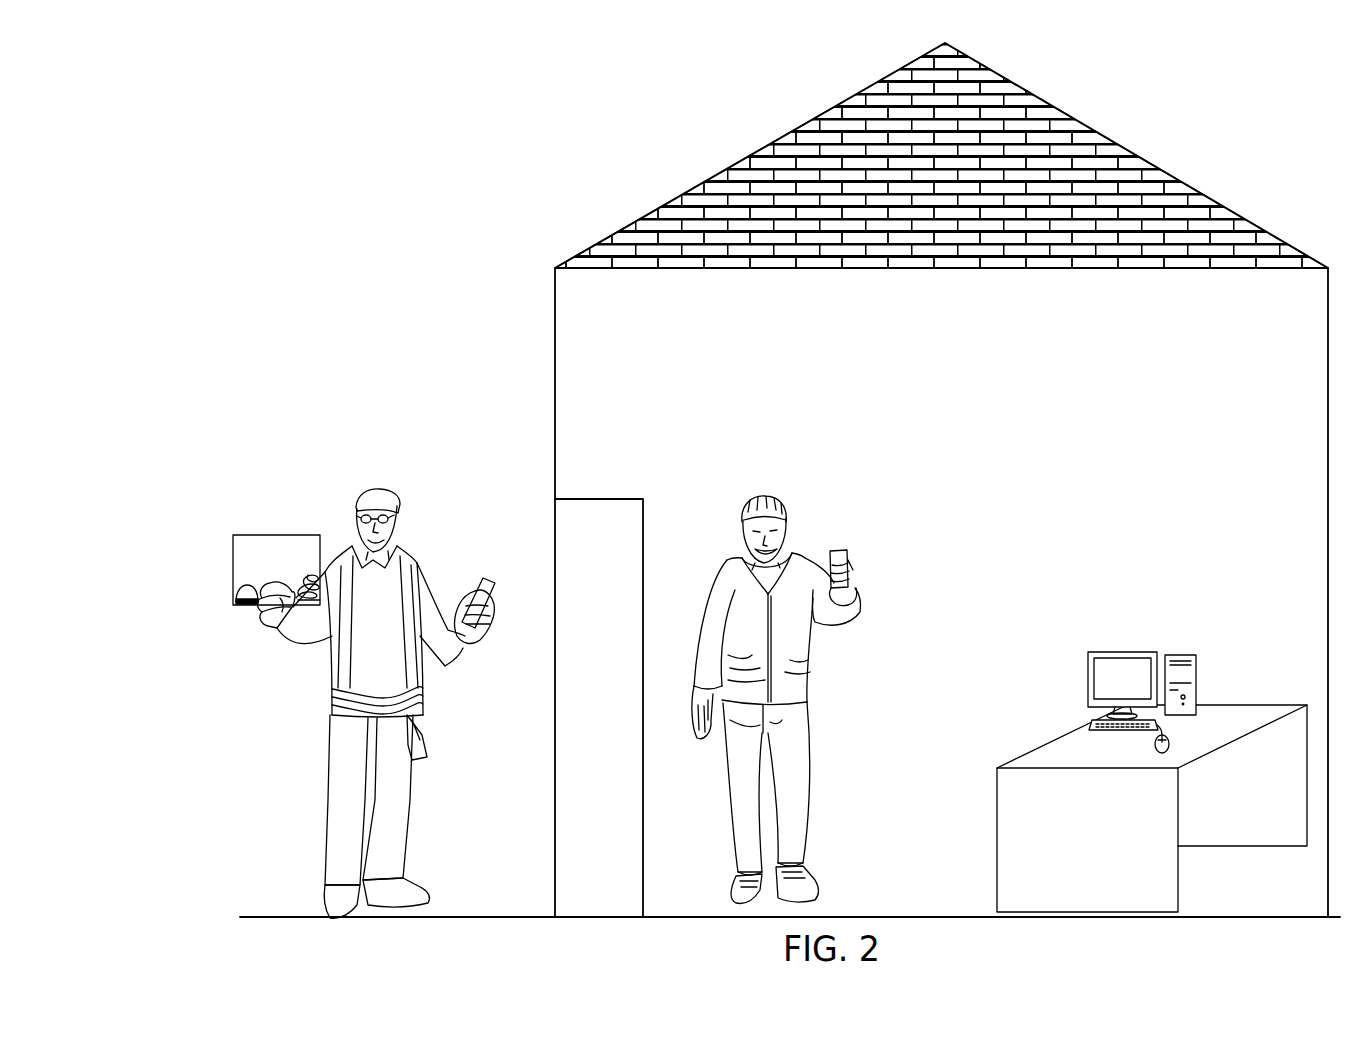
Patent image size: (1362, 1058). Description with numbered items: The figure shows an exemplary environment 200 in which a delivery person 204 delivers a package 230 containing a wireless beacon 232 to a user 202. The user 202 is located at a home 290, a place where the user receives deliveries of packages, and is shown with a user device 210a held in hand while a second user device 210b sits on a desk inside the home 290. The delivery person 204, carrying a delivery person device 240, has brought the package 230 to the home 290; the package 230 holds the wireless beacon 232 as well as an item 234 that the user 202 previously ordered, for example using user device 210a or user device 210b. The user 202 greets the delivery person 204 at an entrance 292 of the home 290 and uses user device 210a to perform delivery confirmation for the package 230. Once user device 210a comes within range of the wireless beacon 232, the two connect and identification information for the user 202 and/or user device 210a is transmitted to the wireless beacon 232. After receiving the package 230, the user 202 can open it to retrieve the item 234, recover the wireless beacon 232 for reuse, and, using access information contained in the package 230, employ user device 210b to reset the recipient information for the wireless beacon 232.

The environment 200 is at (1251, 126).
The home 290 is at (985, 307).
The entrance 292 is at (626, 492).
The user 202 is at (768, 497).
The user device 210a is at (838, 547).
The user device 210b is at (1125, 650).
The delivery person 204 is at (373, 487).
The delivery person device 240 is at (487, 578).
The package 230 is at (260, 535).
The wireless beacon 232 is at (308, 575).
The item 234 is at (236, 594).